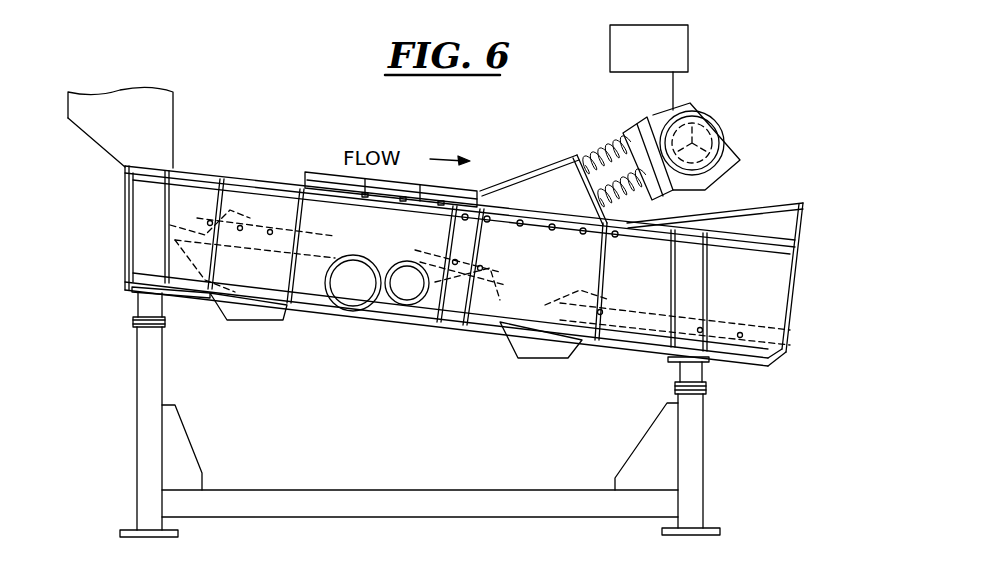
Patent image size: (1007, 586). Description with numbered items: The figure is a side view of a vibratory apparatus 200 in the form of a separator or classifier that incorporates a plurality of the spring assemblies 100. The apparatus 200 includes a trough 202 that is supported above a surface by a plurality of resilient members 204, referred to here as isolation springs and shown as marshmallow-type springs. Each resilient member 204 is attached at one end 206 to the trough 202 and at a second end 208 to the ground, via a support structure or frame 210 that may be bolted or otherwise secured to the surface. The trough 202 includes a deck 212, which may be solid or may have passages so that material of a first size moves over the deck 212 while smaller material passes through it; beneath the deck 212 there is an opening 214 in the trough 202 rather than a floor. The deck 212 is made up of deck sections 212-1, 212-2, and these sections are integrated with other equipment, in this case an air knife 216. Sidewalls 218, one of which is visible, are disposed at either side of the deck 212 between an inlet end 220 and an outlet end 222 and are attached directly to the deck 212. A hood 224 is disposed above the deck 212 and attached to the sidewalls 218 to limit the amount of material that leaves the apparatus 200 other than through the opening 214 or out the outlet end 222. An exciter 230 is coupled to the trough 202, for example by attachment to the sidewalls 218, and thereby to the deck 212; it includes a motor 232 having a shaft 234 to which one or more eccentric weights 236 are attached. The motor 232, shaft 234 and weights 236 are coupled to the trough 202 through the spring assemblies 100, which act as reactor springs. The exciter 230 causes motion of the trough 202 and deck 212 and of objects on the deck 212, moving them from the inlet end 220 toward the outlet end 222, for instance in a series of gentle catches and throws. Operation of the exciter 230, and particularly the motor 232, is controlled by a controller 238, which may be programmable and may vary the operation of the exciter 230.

The spring assembly 100 is at (596, 148).
The vibratory apparatus 200 is at (688, 116).
The trough 202 is at (475, 194).
The resilient members 204 is at (158, 304).
The one end 206 is at (131, 290).
The second end 208 is at (132, 325).
The support structure or frame 210 is at (350, 503).
The deck 212 is at (268, 216).
The deck section 212-1 is at (193, 217).
The deck section 212-2 is at (770, 343).
The opening 214 is at (245, 320).
The air knife 216 is at (455, 335).
The sidewalls 218 is at (147, 232).
The inlet end 220 is at (125, 204).
The outlet end 222 is at (823, 305).
The hood 224 is at (289, 185).
The exciter 230 is at (686, 103).
The motor 232 is at (728, 140).
The shaft 234 is at (705, 175).
The eccentric weights 236 is at (664, 116).
The controller 238 is at (625, 48).